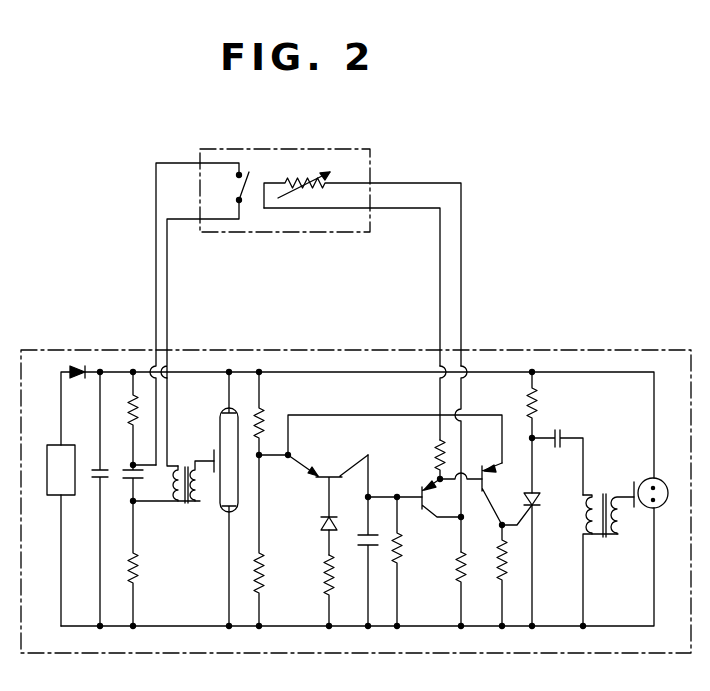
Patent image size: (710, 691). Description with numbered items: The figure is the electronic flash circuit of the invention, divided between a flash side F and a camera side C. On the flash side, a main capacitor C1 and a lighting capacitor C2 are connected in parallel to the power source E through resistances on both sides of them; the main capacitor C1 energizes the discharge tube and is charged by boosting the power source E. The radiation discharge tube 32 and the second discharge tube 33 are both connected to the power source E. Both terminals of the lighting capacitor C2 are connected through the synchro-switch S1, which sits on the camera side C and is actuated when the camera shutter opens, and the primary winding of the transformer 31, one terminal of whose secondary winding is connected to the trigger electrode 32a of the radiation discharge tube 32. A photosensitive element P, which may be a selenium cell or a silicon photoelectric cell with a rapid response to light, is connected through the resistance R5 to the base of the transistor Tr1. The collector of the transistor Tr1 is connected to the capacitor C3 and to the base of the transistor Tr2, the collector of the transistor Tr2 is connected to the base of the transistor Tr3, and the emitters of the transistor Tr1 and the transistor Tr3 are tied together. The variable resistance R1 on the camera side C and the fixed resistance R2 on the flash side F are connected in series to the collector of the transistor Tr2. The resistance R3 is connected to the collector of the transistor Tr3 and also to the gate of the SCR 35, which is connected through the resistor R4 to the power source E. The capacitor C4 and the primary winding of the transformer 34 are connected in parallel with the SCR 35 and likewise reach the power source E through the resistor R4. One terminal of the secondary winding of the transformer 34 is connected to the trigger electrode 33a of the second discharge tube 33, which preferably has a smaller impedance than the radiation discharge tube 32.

The camera side C is at (293, 149).
The flash side F is at (500, 352).
The synchro-switch S1 is at (236, 186).
The variable resistance R1 is at (317, 183).
The power source E is at (66, 496).
The main capacitor C1 is at (108, 478).
The lighting capacitor C2 is at (145, 499).
The transformer 31 is at (186, 505).
The radiation discharge tube 32 is at (224, 512).
The trigger electrode 32a is at (213, 458).
The transistor Tr1 is at (316, 477).
The photosensitive element P is at (320, 523).
The capacitor C3 is at (360, 540).
The resistance R5 is at (325, 575).
The transistor Tr2 is at (426, 508).
The transistor Tr3 is at (482, 490).
The fixed resistance R2 is at (463, 566).
The resistance R3 is at (508, 568).
The resistor R4 is at (534, 420).
The capacitor C4 is at (566, 418).
The SCR 35 is at (538, 506).
The transformer 34 is at (608, 534).
The trigger electrode 33a is at (634, 488).
The second discharge tube 33 is at (668, 497).